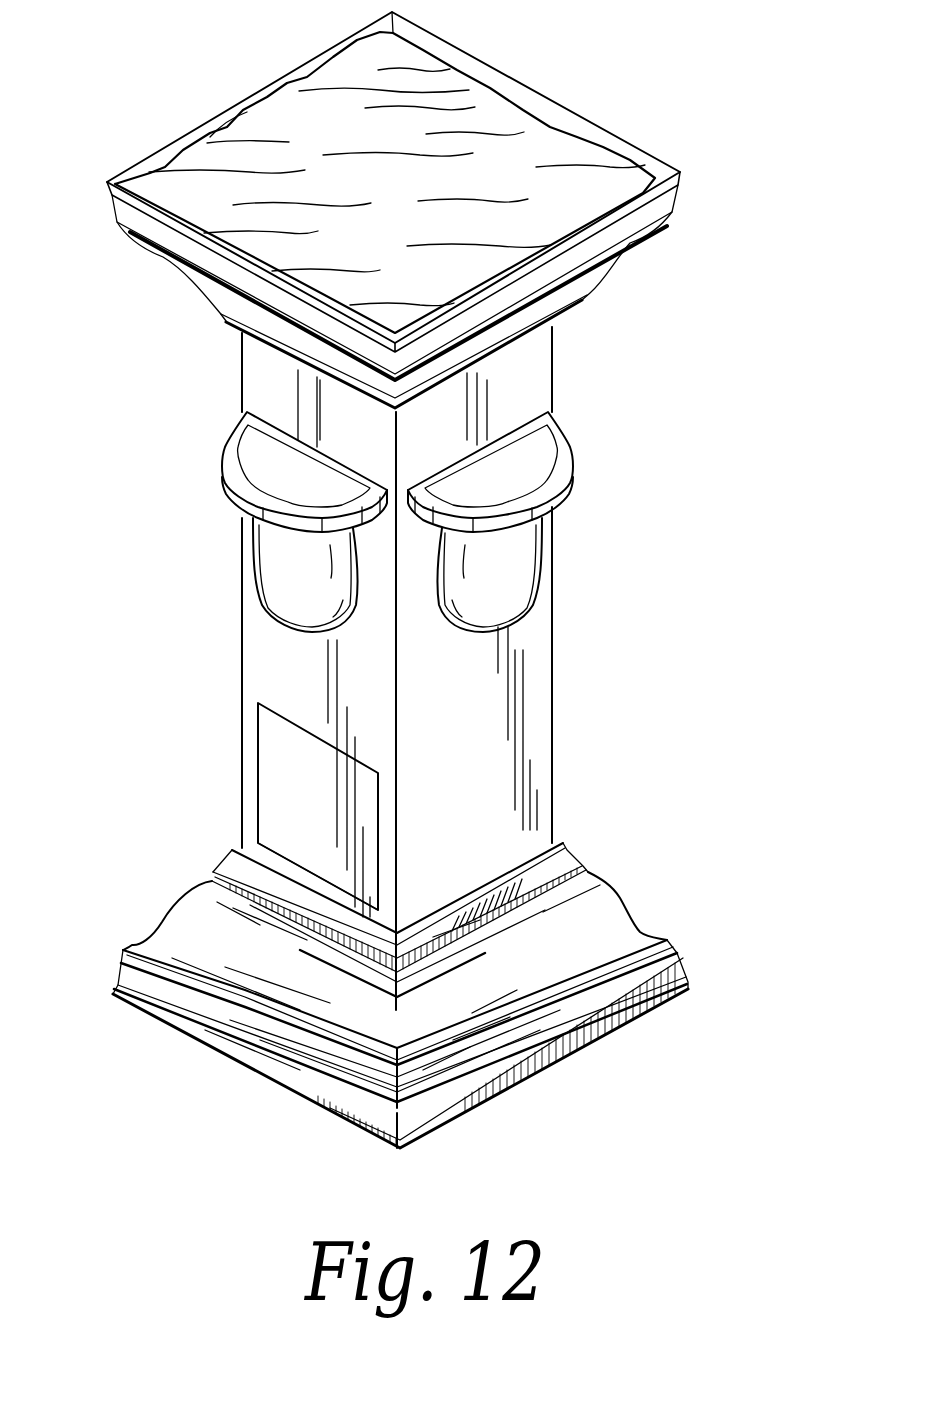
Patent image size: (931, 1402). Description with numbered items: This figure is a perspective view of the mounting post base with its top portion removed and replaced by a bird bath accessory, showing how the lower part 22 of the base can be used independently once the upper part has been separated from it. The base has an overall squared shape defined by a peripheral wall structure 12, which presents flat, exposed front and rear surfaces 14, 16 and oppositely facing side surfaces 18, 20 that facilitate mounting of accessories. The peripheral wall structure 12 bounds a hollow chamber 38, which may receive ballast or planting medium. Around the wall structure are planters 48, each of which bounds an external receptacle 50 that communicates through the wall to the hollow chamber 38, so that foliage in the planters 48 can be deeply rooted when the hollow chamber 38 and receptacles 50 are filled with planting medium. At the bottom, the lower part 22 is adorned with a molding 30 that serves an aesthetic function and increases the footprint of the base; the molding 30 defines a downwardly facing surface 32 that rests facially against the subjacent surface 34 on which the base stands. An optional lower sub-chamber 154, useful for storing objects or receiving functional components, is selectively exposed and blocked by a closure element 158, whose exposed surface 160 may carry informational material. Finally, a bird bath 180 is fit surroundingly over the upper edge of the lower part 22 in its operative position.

The peripheral wall structure 12 is at (575, 716).
The front surface 14 is at (268, 663).
The rear surface 16 is at (552, 578).
The side surface 18 is at (240, 372).
The side surface 20 is at (552, 343).
The lower part 22 is at (552, 783).
The molding 30 is at (618, 885).
The downwardly facing surface 32 is at (570, 1058).
The subjacent surface 34 is at (699, 1075).
The hollow chamber 38 is at (453, 682).
The planter 48 is at (277, 594).
The external receptacle 50 is at (260, 453).
The sub-chamber 154 is at (318, 825).
The closure element 158 is at (293, 773).
The exposed surface 160 is at (283, 823).
The bird bath 180 is at (536, 70).